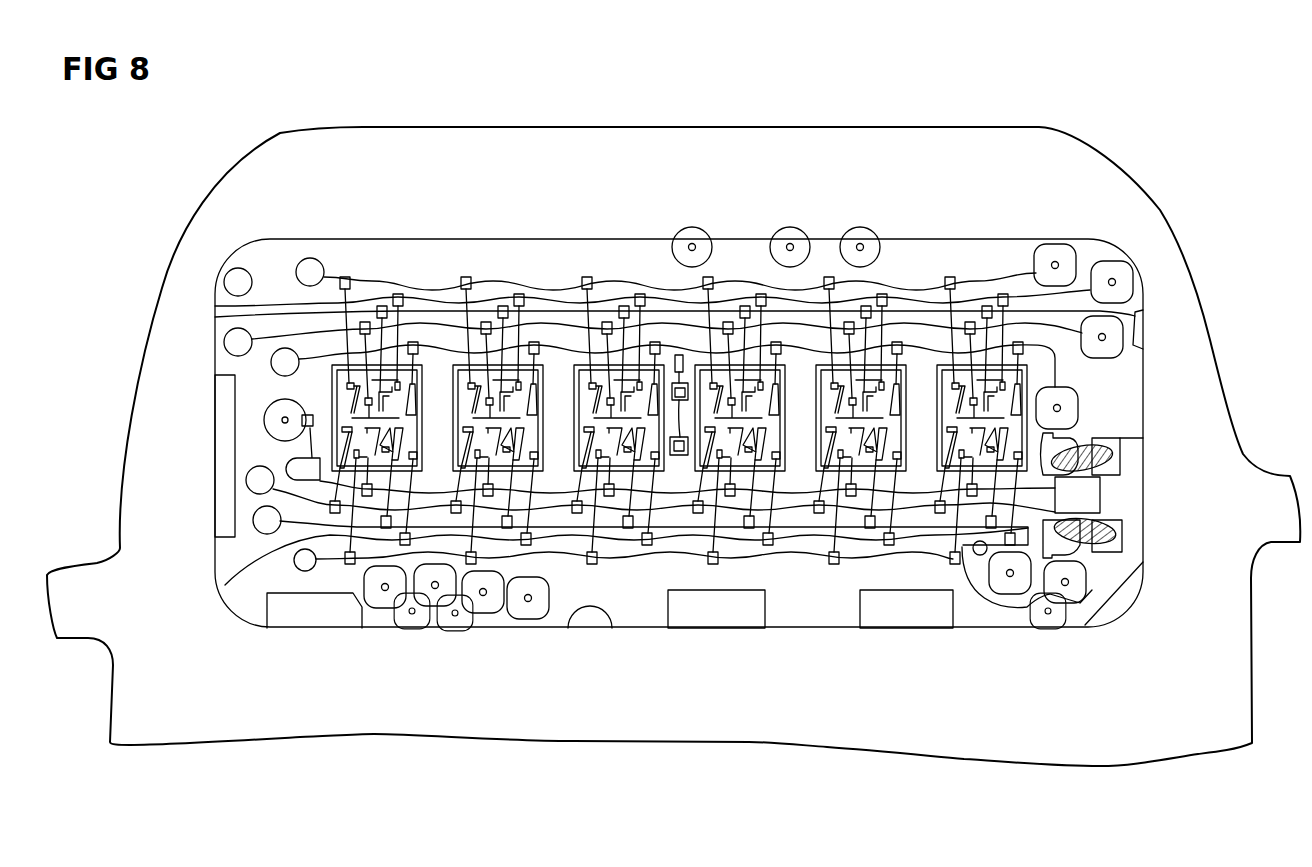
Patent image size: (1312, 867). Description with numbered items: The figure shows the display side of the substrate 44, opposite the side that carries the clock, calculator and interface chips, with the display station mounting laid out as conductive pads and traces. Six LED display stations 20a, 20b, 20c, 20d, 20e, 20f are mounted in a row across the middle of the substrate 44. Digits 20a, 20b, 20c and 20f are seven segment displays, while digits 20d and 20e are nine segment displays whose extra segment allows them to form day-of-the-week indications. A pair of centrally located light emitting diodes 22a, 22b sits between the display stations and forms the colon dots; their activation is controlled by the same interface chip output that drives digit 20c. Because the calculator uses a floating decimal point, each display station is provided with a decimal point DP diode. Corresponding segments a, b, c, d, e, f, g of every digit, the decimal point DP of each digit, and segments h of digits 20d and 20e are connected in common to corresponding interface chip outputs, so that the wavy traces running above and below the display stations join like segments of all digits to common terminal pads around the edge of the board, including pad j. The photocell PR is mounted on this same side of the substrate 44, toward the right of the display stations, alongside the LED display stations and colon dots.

The display station 20a is at (945, 413).
The display station 20b is at (898, 430).
The display station 20c is at (777, 430).
The display station 20d is at (574, 422).
The display station 20e is at (533, 430).
The display station 20f is at (412, 430).
The light emitting diode 22a is at (676, 355).
The light emitting diode 22b is at (679, 455).
The substrate 44 is at (790, 614).
The decimal point DP is at (230, 578).
The photocell PR is at (1088, 498).
The segment a is at (1122, 278).
The segment b is at (1070, 412).
The segment c is at (1002, 587).
The segment d is at (1077, 587).
The segment e is at (260, 476).
The segment f is at (1044, 258).
The segment g is at (1108, 350).
The segment h is at (1137, 327).
The terminal pad j is at (268, 418).